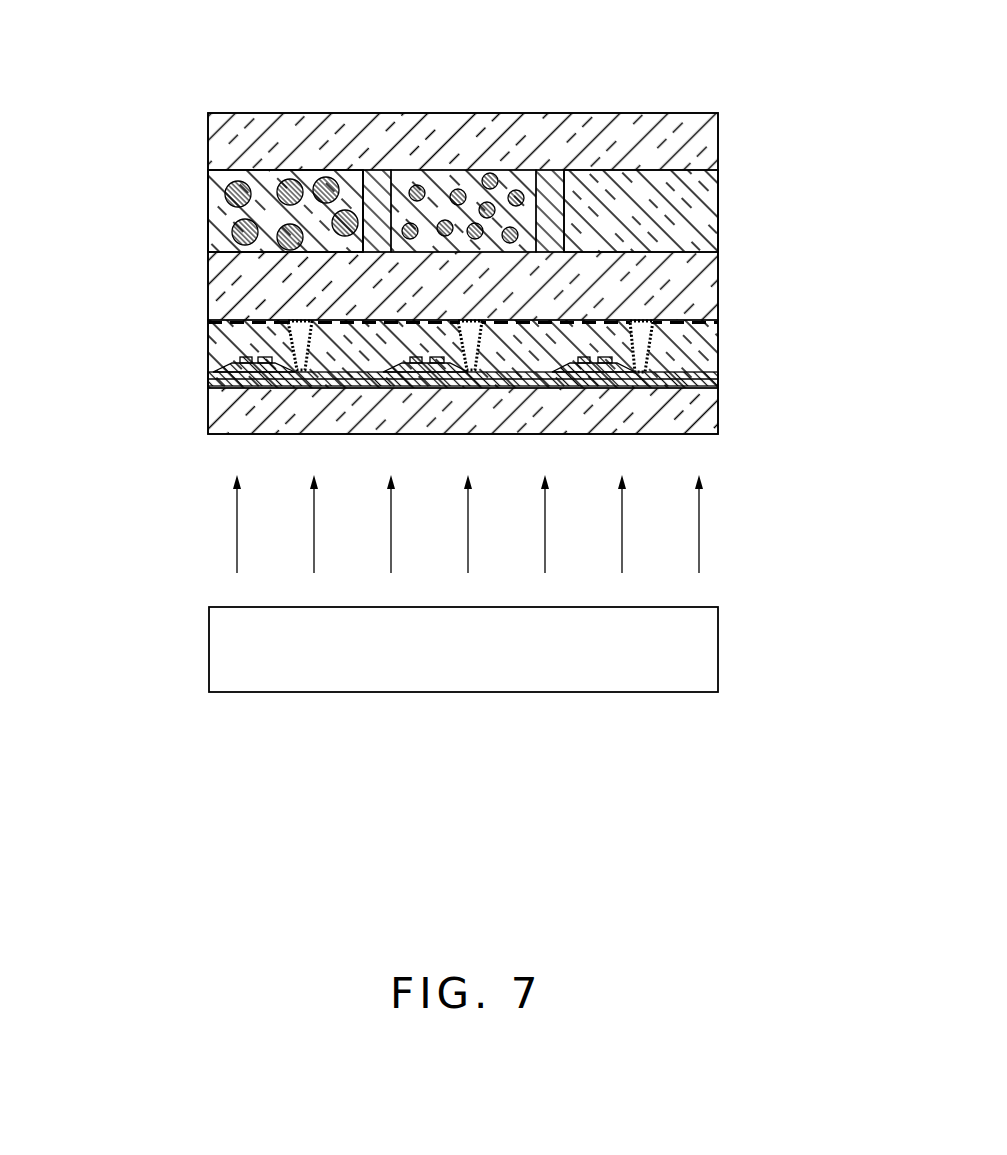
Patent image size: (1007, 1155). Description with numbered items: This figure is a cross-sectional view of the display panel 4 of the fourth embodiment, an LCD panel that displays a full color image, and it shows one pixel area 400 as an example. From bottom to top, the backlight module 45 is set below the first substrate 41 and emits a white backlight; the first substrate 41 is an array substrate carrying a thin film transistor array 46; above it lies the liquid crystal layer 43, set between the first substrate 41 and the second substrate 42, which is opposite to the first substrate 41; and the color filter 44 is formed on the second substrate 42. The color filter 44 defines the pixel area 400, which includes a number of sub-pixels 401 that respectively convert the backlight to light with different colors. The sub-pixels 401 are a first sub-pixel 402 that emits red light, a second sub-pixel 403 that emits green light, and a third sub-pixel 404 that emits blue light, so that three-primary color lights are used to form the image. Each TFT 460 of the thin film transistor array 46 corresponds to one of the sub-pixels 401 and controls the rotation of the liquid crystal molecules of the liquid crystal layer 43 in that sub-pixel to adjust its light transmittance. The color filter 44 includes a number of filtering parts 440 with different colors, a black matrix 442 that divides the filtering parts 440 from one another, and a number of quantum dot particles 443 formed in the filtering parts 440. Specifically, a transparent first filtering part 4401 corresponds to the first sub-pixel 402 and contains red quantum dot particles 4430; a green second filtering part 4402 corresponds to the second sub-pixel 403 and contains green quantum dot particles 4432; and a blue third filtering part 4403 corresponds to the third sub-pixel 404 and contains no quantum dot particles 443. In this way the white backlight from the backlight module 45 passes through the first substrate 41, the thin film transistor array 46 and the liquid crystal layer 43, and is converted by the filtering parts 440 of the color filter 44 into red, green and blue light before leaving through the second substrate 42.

The display panel 4 is at (182, 47).
The pixel area 400 is at (660, 46).
The first sub-pixel 402 is at (375, 110).
The second sub-pixel 403 is at (548, 110).
The third sub-pixel 404 is at (718, 110).
The second substrate 42 is at (702, 141).
The sub-pixels 401 is at (688, 185).
The green quantum dot particles 4432 is at (520, 236).
The blue third filtering part 4403 is at (693, 240).
The green second filtering part 4402 is at (497, 246).
The thin film transistor array 46 is at (662, 355).
The color filter 44 is at (117, 128).
The black matrix 442 is at (372, 184).
The filtering parts 440 is at (230, 190).
The quantum dot particles 443 is at (222, 229).
The transparent first filtering part 4401 is at (208, 241).
The red quantum dot particles 4430 is at (287, 249).
The liquid crystal layer 43 is at (235, 305).
The TFT 460 is at (232, 350).
The first substrate 41 is at (230, 415).
The backlight module 45 is at (222, 650).